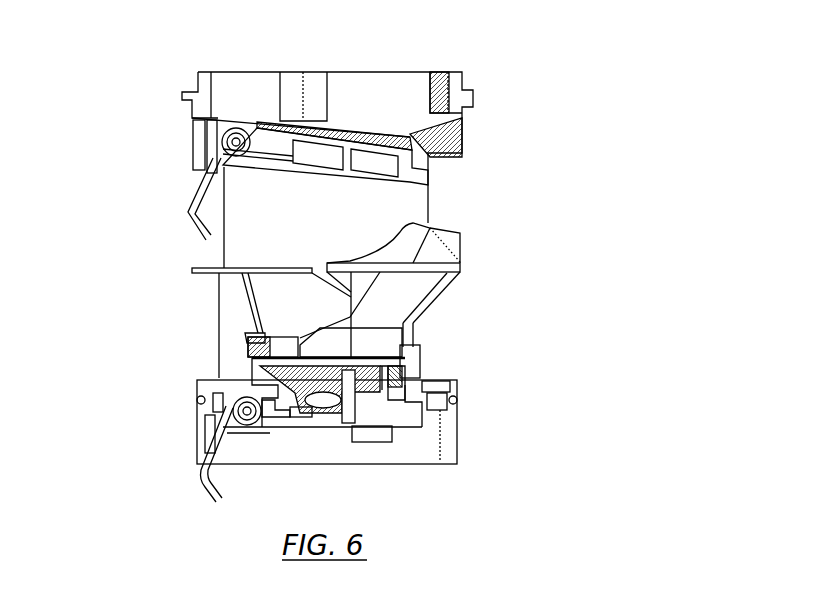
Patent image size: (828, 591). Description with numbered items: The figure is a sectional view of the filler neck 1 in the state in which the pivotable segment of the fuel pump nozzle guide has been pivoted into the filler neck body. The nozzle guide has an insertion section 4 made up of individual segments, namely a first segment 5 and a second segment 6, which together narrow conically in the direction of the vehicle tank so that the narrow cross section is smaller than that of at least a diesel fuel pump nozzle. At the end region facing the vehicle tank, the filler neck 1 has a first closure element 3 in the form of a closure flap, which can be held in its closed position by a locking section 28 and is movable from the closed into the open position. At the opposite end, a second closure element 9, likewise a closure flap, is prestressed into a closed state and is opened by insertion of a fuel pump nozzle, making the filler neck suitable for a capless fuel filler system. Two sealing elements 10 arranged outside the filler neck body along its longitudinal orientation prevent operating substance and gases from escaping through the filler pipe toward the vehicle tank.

The filler neck 1 is at (485, 34).
The first closure element 3 is at (335, 418).
The insertion section 4 is at (633, 272).
The first segment 5 is at (258, 306).
The second segment 6 is at (415, 320).
The second closure element 9 is at (411, 138).
The sealing elements 10 is at (446, 132).
The locking section 28 is at (418, 358).